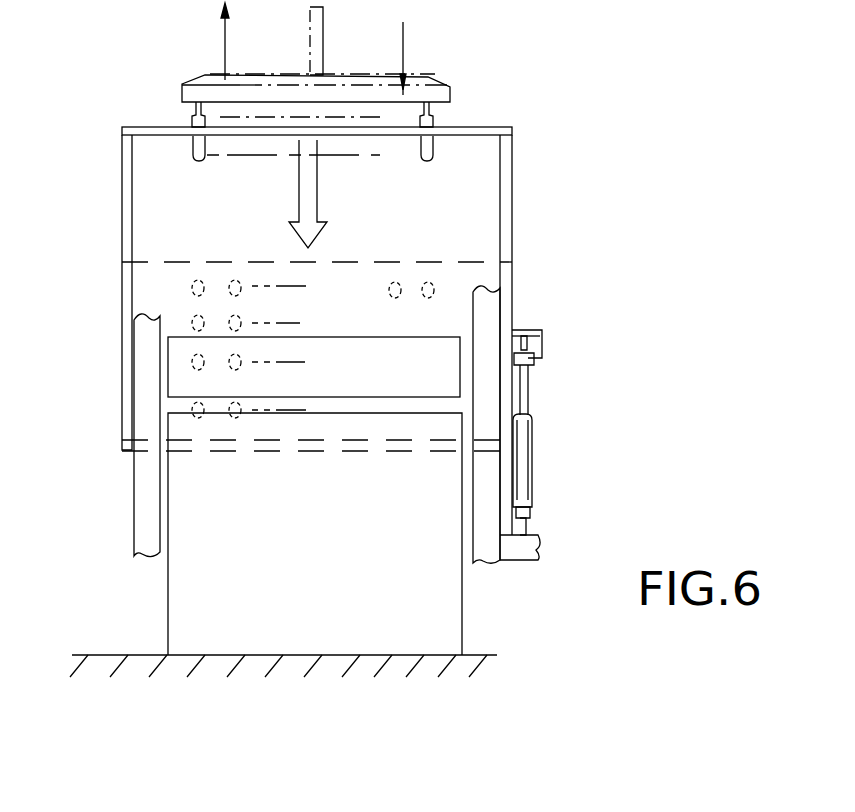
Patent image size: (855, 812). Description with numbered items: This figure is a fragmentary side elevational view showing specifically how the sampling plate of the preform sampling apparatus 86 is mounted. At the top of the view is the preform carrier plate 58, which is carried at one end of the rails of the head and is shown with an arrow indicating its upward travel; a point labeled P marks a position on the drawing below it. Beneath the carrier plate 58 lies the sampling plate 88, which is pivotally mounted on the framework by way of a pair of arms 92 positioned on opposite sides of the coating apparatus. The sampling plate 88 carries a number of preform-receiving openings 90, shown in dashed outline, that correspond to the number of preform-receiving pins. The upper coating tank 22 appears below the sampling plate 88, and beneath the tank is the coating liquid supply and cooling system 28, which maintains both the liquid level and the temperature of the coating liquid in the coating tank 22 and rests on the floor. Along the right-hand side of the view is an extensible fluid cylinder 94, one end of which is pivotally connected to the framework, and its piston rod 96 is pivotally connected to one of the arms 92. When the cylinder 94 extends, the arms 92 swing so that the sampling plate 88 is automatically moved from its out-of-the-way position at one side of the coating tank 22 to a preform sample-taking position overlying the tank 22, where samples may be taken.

The preform carrier plate 58 is at (427, 77).
The point P / pitch reference P is at (193, 147).
The sampling plate 88 is at (475, 128).
The arms 92 is at (122, 228).
The preform sampling apparatus 86 is at (517, 315).
The preform-receiving openings 90 is at (235, 280).
The upper coating tank 22 is at (374, 350).
The coating liquid supply and cooling system 28 is at (428, 608).
The piston rod 96 is at (528, 378).
The extensible fluid cylinder 94 is at (533, 462).